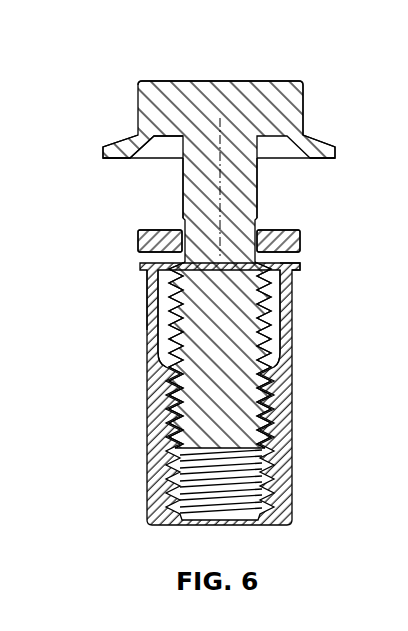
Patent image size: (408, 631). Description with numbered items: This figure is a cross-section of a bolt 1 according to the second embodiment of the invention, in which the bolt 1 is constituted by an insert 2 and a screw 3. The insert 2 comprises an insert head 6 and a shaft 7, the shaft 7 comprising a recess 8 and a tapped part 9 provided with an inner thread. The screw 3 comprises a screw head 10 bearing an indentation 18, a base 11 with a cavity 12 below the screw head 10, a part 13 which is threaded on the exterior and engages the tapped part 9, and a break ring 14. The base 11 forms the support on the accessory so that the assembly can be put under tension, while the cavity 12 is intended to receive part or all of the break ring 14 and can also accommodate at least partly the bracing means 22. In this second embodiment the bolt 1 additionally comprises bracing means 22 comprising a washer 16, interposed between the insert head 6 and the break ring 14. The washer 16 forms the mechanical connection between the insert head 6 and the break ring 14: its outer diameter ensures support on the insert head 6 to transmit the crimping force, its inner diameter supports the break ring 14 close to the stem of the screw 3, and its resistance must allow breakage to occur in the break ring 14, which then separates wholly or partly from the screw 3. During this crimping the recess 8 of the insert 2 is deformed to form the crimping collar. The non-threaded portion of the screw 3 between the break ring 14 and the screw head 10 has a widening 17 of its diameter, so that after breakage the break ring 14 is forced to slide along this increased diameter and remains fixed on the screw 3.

The bolt 1 is at (88, 110).
The insert 2 is at (126, 442).
The screw 3 is at (149, 74).
The insert head 6 is at (300, 268).
The shaft 7 is at (136, 334).
The recess 8 is at (147, 298).
The tapped part 9 is at (192, 508).
The screw head 10 is at (263, 87).
The base 11 is at (330, 140).
The cavity 12 is at (147, 150).
The part which is threaded on the exterior 13 is at (264, 332).
The break ring 14 is at (259, 220).
The washer 16 is at (287, 240).
The widening 17 is at (259, 190).
The indentation 18 is at (303, 100).
The bracing means 22 is at (132, 247).